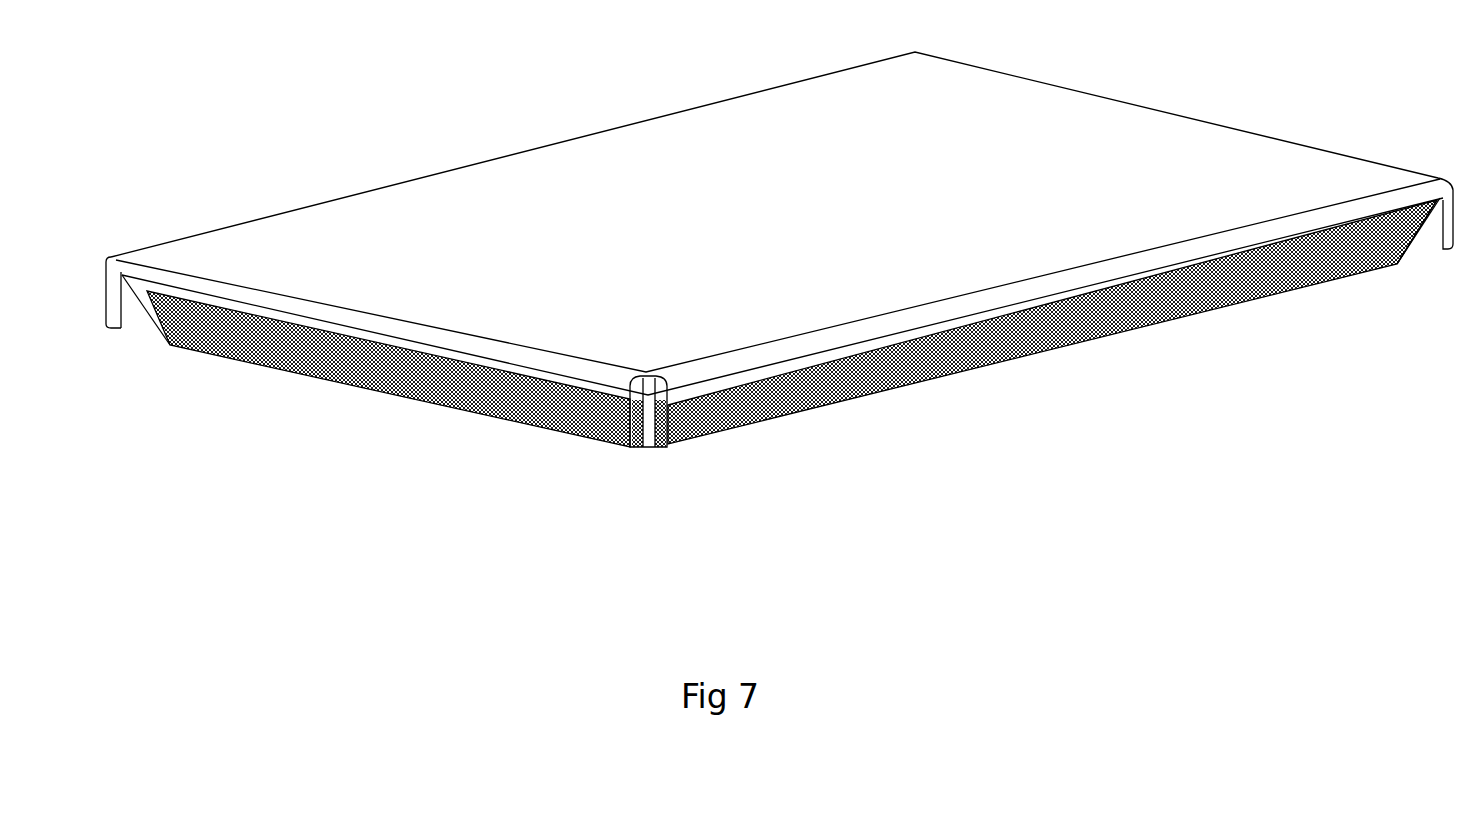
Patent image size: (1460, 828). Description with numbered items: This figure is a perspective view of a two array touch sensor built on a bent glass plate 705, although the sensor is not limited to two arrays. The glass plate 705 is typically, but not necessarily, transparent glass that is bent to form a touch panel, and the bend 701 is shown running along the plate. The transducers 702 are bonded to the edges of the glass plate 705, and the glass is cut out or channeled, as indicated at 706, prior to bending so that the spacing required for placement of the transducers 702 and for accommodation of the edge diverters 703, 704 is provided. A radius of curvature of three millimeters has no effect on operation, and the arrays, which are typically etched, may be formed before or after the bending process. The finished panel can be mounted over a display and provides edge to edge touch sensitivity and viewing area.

The bend 701 is at (477, 343).
The transducer 702 is at (648, 447).
The edge diverter 703 is at (1410, 235).
The edge diverter 704 is at (147, 312).
The glass plate 705 is at (785, 192).
The cut out or channel 706 is at (660, 378).